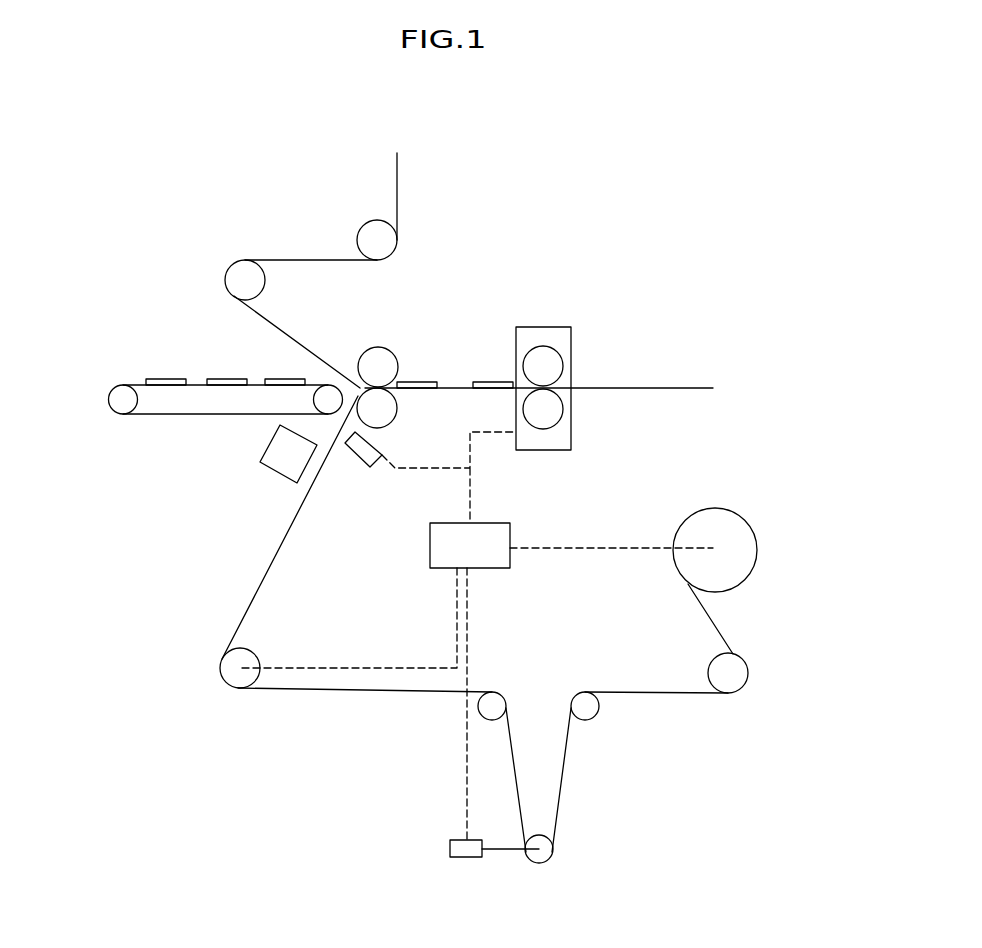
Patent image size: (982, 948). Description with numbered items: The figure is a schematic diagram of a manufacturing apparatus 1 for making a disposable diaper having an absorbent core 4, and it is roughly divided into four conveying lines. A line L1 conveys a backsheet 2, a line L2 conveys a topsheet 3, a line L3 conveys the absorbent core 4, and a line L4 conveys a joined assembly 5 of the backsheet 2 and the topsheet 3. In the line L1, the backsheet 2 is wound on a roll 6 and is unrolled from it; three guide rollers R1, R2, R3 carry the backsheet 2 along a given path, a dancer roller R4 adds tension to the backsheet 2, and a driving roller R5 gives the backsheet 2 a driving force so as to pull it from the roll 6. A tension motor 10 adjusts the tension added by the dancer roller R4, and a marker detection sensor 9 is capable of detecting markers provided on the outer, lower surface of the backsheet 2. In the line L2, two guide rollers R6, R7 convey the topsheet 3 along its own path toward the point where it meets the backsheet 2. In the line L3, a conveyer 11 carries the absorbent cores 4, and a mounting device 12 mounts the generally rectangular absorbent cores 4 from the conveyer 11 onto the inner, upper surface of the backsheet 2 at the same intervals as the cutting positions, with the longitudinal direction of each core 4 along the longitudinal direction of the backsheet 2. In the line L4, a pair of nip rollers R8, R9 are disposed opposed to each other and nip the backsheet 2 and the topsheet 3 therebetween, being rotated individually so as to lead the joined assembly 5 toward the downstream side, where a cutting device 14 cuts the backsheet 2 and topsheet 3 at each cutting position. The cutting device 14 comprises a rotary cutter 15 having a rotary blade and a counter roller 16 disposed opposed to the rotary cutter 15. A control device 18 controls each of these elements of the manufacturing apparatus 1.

The manufacturing apparatus 1 is at (183, 180).
The backsheet 2 is at (650, 697).
The topsheet 3 is at (397, 180).
The absorbent core 4 is at (172, 378).
The joined assembly 5 is at (448, 386).
The roll 6 is at (750, 568).
The marker detection sensor 9 is at (356, 458).
The tension motor 10 is at (460, 860).
The conveyer 11 is at (112, 400).
The mounting device 12 is at (287, 479).
The cutting device 14 is at (551, 327).
The rotary cutter 15 is at (555, 367).
The counter roller 16 is at (553, 408).
The control device 18 is at (492, 523).
The line for conveying a backsheet L1 is at (633, 806).
The line for conveying a topsheet L2 is at (280, 242).
The line for conveying the absorbent core L3 is at (207, 423).
The line for conveying a joined assembly L4 is at (493, 299).
The guide roller R1 is at (737, 675).
The guide roller R2 is at (582, 698).
The guide roller R3 is at (487, 698).
The dancer roller R4 is at (533, 858).
The driving roller R5 is at (232, 678).
The guide roller R6 is at (385, 242).
The guide roller R7 is at (257, 280).
The nip roller R8 is at (370, 360).
The nip roller R9 is at (386, 414).